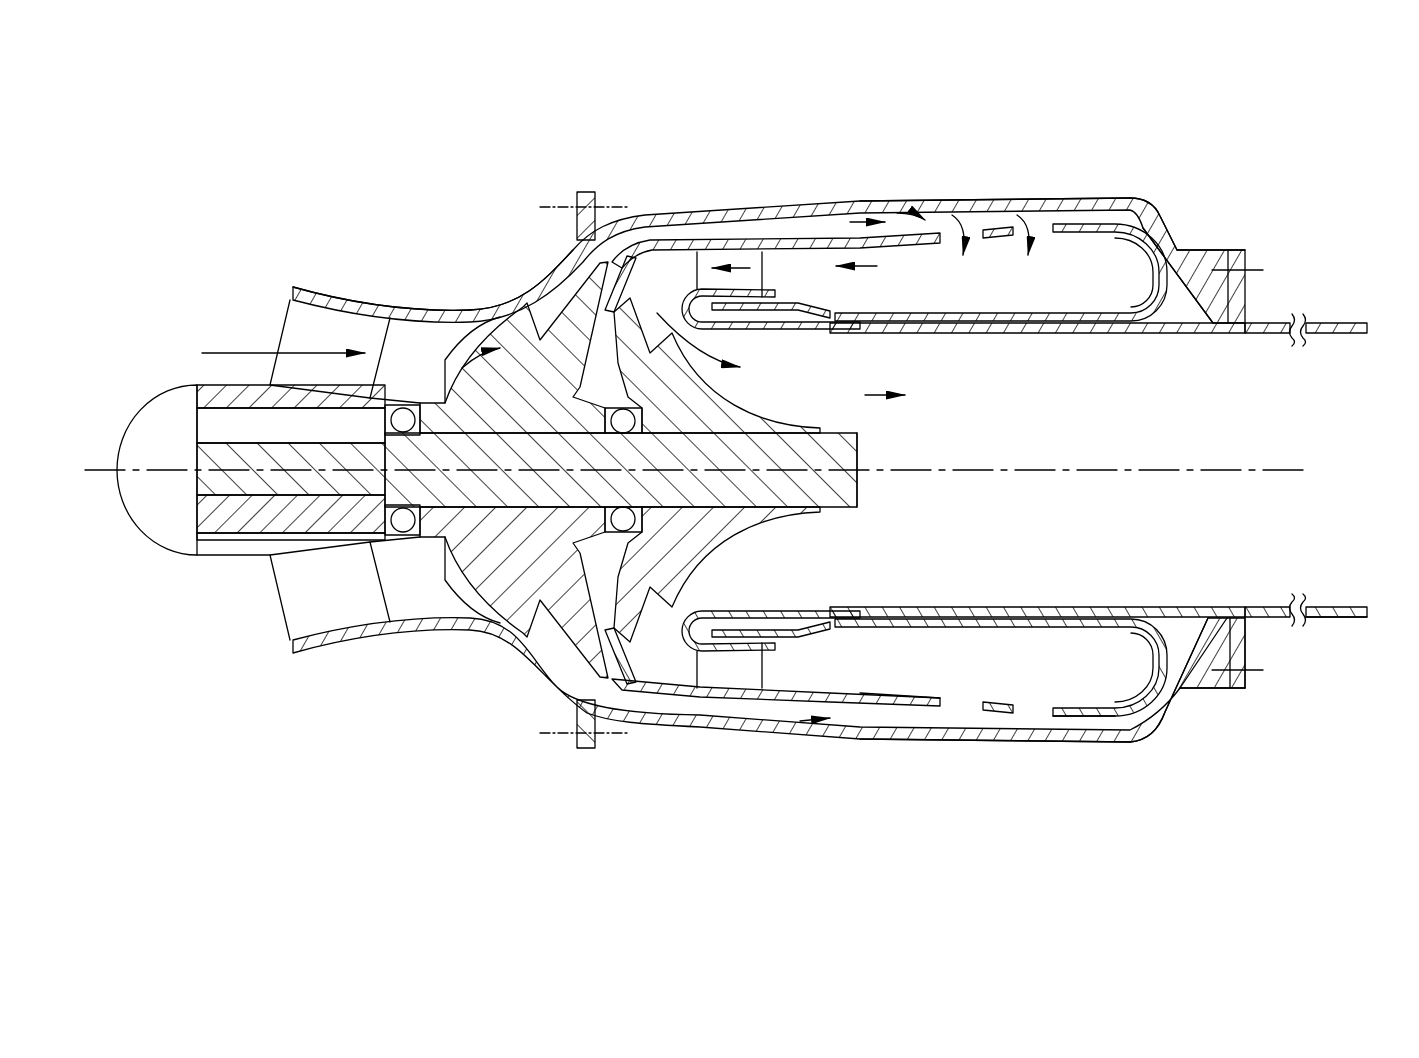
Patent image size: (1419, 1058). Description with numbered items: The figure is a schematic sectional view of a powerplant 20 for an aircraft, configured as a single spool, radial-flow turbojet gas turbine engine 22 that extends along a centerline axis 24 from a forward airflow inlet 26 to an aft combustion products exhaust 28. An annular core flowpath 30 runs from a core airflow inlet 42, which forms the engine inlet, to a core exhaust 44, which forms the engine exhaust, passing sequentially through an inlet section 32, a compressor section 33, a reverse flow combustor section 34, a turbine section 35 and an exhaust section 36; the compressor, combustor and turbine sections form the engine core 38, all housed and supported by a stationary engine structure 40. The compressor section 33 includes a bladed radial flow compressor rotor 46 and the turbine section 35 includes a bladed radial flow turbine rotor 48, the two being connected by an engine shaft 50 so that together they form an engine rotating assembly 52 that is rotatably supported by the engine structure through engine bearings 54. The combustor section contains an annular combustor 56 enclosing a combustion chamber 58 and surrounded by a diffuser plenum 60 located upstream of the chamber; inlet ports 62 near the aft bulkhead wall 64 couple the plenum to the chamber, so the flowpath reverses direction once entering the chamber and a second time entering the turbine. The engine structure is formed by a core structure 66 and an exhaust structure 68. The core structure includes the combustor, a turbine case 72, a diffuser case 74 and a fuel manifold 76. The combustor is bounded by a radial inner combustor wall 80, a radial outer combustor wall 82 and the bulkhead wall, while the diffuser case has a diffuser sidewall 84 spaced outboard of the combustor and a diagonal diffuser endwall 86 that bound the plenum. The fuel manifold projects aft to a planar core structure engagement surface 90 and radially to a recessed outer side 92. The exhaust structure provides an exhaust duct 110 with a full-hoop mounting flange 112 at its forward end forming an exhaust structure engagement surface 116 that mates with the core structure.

The powerplant 20 is at (733, 506).
The turbine engine 22 is at (173, 145).
The axis 24 is at (113, 472).
The airflow inlet 26 is at (281, 461).
The airflow inlet 42 is at (283, 320).
The combustion products exhaust 28 is at (1332, 376).
The combustion products exhaust 44 is at (1327, 380).
The core flowpath 30 is at (425, 366).
The inlet section 32 is at (368, 283).
The compressor section 33 is at (478, 290).
The combustor section 34 is at (1037, 213).
The turbine section 35 is at (658, 278).
The exhaust section 36 is at (1298, 300).
The core 38 is at (847, 170).
The stationary engine structure 40 is at (1146, 158).
The compressor rotor 46 is at (507, 585).
The turbine rotor 48 is at (707, 530).
The engine shaft 50 is at (858, 448).
The engine rotating assembly 52 is at (868, 497).
The engine bearings 54 is at (393, 532).
The combustor 56 is at (893, 710).
The combustion chamber 58 is at (1000, 291).
The diffuser plenum 60 is at (892, 213).
The inlet ports 62 is at (960, 710).
The aft bulkhead wall 64 is at (1160, 265).
The core structure 66 is at (1137, 745).
The exhaust structure 68 is at (1318, 658).
The turbine case 72 is at (1088, 342).
The diffuser case 74 is at (1082, 195).
The fuel manifold 76 is at (1207, 246).
The radial inner combustor wall 80 is at (1068, 620).
The radial outer combustor wall 82 is at (1085, 710).
The diffuser sidewall 84 is at (1085, 743).
The diffuser endwall 86 is at (1175, 735).
The core structure engagement surface 90 is at (1232, 655).
The radial outer side 92 is at (1205, 690).
The exhaust duct 110 is at (1336, 608).
The mounting flange 112 is at (1252, 640).
The exhaust structure engagement surface 116 is at (1225, 640).